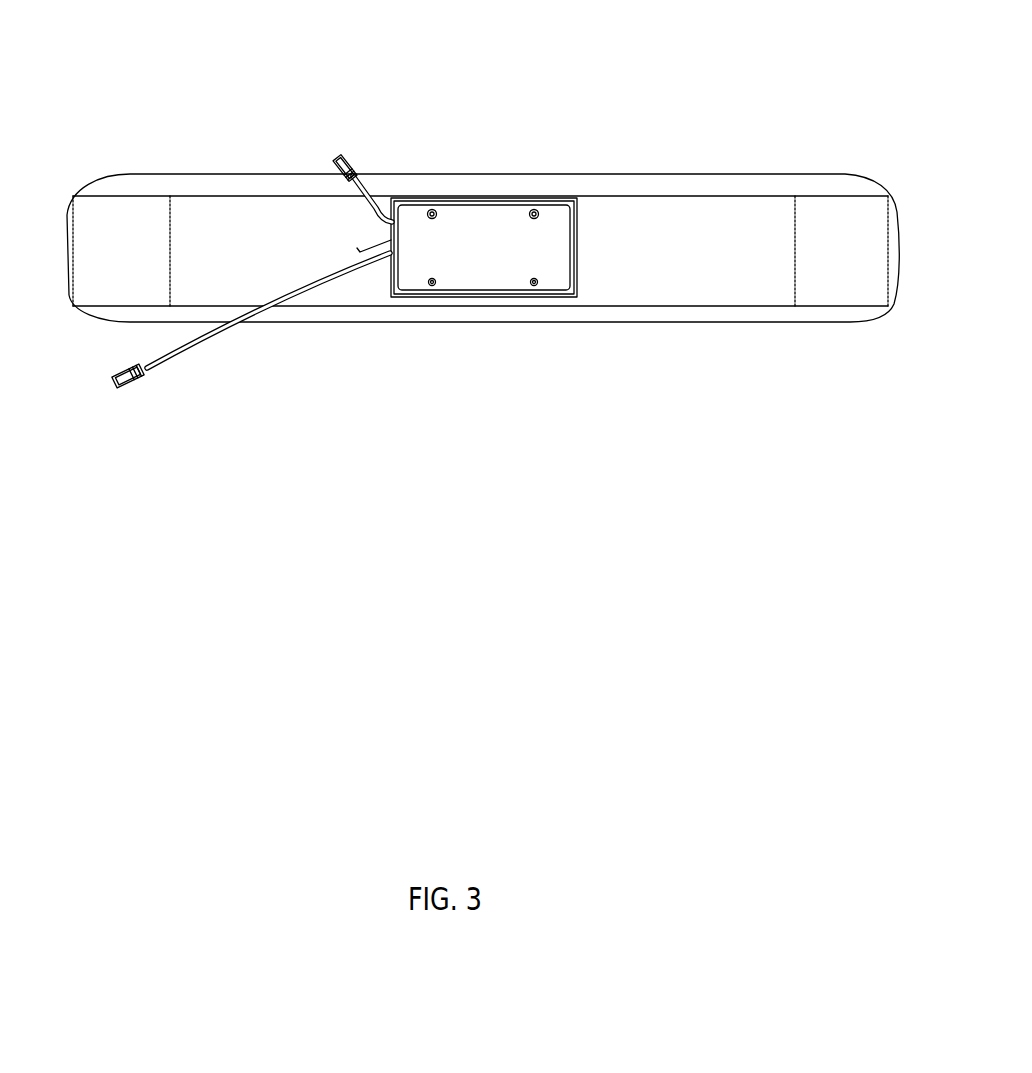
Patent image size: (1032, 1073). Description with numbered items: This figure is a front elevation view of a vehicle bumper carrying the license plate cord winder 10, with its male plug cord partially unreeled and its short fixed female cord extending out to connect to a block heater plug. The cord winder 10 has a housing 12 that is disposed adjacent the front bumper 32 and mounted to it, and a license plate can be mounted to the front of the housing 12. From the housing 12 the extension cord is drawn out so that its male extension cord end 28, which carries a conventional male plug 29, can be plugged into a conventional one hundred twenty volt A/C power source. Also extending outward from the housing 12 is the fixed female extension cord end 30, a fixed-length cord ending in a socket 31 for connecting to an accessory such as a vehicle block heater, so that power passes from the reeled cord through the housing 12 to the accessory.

The license plate cord winder 10 is at (414, 117).
The housing 12 is at (391, 281).
The male extension cord end 28 is at (183, 350).
The male plug 29 is at (112, 385).
The fixed female extension cord end 30 is at (373, 220).
The socket 31 is at (337, 160).
The front bumper 32 is at (680, 182).